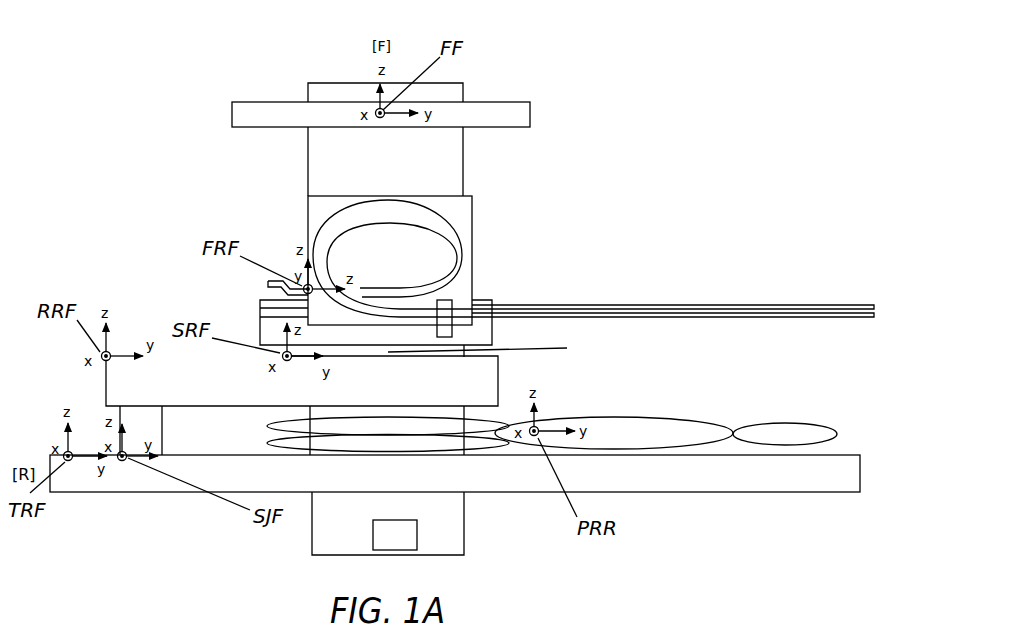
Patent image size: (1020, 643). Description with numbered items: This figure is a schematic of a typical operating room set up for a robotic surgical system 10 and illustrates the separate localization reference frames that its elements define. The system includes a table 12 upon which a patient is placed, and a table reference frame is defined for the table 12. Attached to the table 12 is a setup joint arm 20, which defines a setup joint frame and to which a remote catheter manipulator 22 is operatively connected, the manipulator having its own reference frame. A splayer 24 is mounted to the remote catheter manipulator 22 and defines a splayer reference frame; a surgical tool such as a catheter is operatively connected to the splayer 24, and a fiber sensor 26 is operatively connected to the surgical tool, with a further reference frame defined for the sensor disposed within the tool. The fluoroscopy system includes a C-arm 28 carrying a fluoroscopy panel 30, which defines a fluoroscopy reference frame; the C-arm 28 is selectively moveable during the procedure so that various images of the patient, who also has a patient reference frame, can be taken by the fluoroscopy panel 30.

The robotic surgical system 10 is at (236, 158).
The table 12 is at (173, 487).
The setup joint arm 20 is at (145, 418).
The remote catheter manipulator (RCM) 22 is at (498, 382).
The splayer 24 is at (285, 347).
The fiber sensor 26 is at (312, 257).
The C-arm 28 is at (463, 163).
The fluoroscopy panel 30 is at (508, 102).